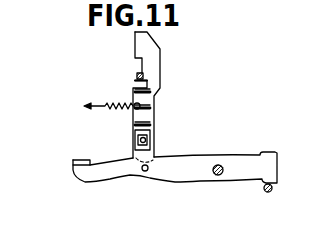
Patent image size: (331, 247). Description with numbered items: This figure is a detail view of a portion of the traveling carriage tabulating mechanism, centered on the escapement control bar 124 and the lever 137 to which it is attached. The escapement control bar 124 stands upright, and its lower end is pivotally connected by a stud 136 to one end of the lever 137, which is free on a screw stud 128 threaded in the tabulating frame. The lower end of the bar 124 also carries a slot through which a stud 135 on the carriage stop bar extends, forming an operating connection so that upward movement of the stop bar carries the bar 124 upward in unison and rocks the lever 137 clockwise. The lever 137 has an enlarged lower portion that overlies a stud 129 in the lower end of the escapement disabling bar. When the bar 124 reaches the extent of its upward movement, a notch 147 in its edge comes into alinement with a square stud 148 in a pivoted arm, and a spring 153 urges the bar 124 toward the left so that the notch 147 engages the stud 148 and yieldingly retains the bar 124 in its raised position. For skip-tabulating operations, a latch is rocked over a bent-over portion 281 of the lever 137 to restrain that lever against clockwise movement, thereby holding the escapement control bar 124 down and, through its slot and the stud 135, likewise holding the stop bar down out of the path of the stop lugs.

The escapement control bar 124 is at (144, 43).
The screw stud 128 is at (218, 165).
The stud 129 is at (265, 191).
The stud 135 is at (150, 141).
The stud 136 is at (147, 172).
The lever 137 is at (171, 176).
The notch 147 is at (135, 81).
The square stud 148 is at (138, 72).
The spring 153 is at (117, 110).
The bent-over portion 281 is at (78, 160).